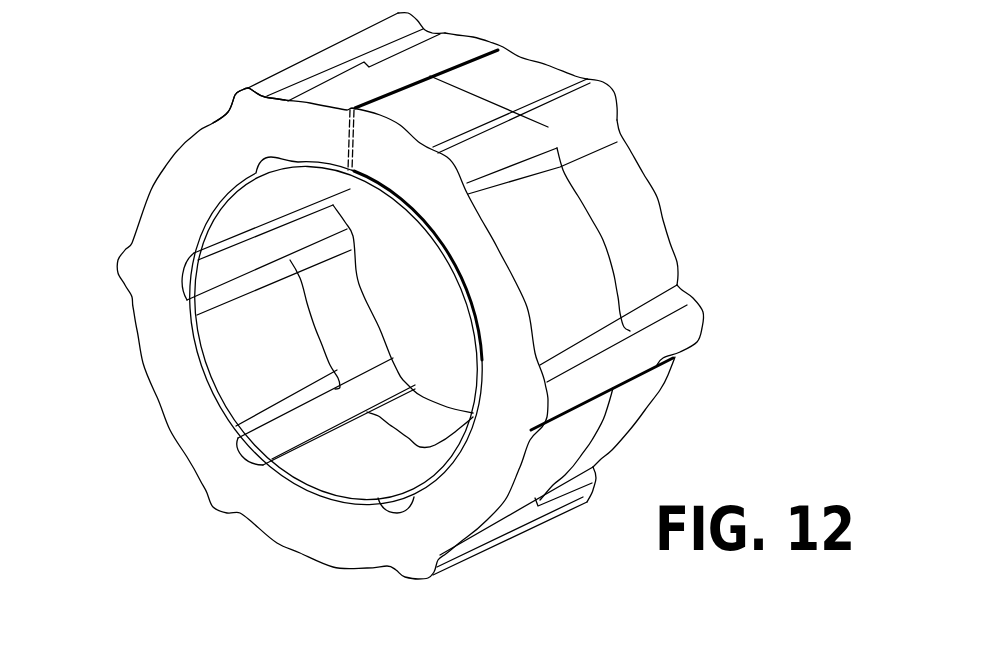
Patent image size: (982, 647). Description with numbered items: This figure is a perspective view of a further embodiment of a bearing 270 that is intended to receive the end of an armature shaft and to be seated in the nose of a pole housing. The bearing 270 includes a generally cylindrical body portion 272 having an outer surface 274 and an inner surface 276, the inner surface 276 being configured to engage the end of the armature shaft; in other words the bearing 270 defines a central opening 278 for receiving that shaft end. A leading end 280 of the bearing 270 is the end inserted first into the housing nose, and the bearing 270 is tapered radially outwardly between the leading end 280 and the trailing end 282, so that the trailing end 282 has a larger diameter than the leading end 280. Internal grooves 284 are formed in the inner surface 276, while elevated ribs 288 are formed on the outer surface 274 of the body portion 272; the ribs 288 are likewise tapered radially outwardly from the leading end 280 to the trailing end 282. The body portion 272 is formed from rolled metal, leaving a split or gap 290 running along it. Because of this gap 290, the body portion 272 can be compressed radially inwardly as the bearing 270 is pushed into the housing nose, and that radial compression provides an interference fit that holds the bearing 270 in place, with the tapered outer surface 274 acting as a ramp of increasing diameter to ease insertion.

The bearing 270 is at (727, 148).
The body portion 272 is at (560, 263).
The outer surface 274 is at (637, 405).
The inner surface 276 is at (263, 382).
The opening 278 is at (403, 296).
The leading end 280 is at (212, 101).
The trailing end 282 is at (377, 12).
The internal grooves 284 is at (292, 418).
The elevated ribs 288 is at (547, 127).
The split or gap 290 is at (504, 48).